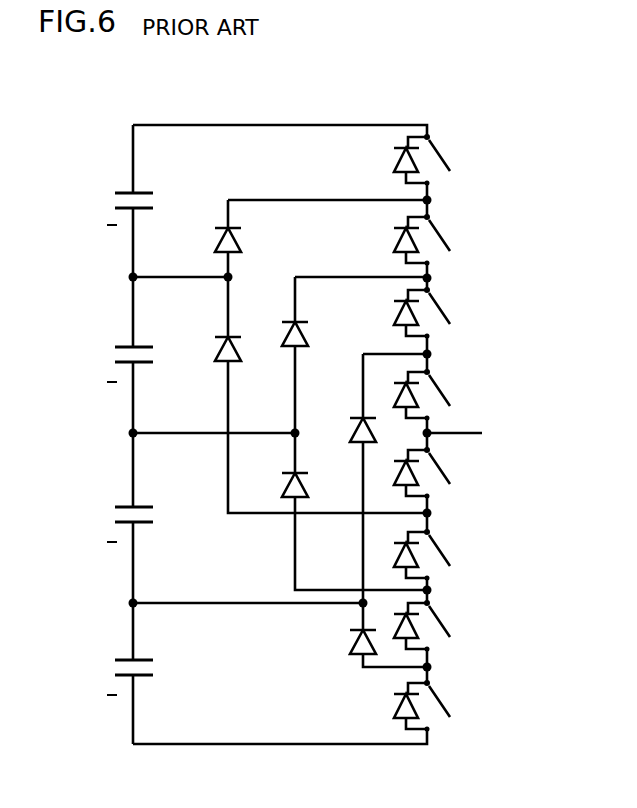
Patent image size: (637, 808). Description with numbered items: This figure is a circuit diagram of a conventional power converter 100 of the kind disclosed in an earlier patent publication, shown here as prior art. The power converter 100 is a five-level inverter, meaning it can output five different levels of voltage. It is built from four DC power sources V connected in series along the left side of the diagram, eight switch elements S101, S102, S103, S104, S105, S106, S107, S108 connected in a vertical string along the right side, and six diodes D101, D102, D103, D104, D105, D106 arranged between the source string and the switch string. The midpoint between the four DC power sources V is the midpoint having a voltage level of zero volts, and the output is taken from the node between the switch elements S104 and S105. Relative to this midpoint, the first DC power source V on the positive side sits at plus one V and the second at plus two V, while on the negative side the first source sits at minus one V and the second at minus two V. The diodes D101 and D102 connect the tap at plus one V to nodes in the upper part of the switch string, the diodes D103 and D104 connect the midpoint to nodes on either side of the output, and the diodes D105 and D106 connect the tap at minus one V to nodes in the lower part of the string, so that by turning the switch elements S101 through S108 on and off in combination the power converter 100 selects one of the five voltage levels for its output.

The power converter 100 is at (447, 58).
The switch element S101 is at (440, 160).
The switch element S102 is at (440, 240).
The switch element S103 is at (440, 313).
The switch element S104 is at (440, 395).
The switch element S105 is at (440, 473).
The switch element S106 is at (440, 555).
The switch element S107 is at (440, 626).
The switch element S108 is at (440, 706).
The diode D101 is at (298, 238).
The diode D102 is at (298, 395).
The diode D103 is at (332, 355).
The diode D104 is at (332, 511).
The diode D105 is at (366, 478).
The diode D106 is at (366, 641).